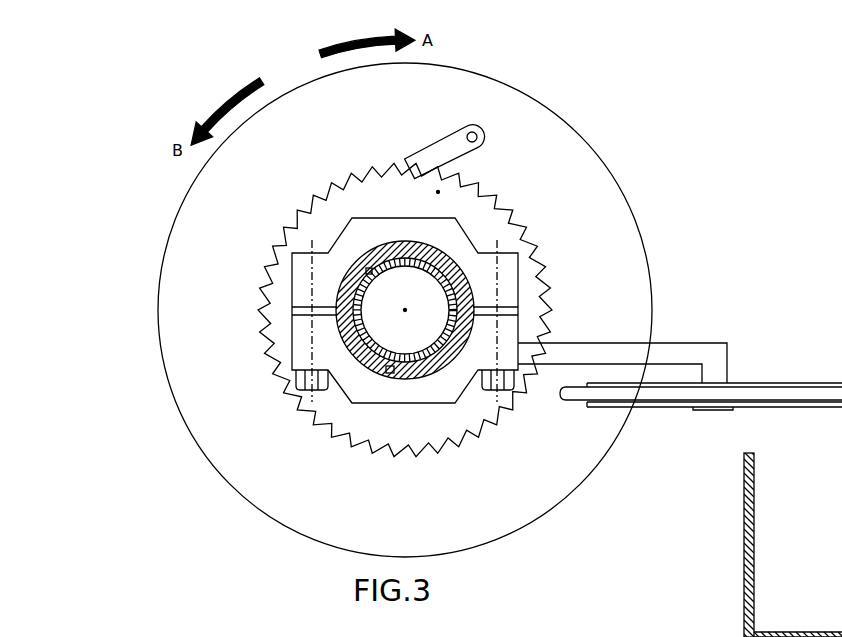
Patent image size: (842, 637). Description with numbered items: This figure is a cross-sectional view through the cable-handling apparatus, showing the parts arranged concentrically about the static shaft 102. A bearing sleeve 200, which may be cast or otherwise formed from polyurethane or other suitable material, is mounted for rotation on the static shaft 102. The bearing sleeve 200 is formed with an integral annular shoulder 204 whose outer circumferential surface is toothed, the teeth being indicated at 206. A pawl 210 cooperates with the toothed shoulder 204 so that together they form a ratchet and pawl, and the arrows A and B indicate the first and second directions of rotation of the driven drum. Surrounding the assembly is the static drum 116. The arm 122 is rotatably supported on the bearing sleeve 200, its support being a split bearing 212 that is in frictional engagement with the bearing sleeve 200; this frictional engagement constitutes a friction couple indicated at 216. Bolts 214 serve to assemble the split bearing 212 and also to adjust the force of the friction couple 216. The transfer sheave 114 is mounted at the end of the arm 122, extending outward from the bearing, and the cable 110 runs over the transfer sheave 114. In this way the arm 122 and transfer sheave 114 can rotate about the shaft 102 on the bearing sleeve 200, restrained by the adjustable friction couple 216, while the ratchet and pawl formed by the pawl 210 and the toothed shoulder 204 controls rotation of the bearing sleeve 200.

The shaft 102 is at (330, 327).
The cable 110 is at (752, 394).
The transfer sheave 114 is at (780, 385).
The static drum 116 is at (470, 88).
The arm 122 is at (700, 350).
The bearing sleeve 200 is at (392, 372).
The annular shoulder 204 is at (438, 192).
The teeth 206 is at (320, 195).
The pawl 210 is at (465, 148).
The split bearing 212 is at (512, 288).
The bolts 214 is at (298, 378).
The friction couple 216 is at (370, 268).